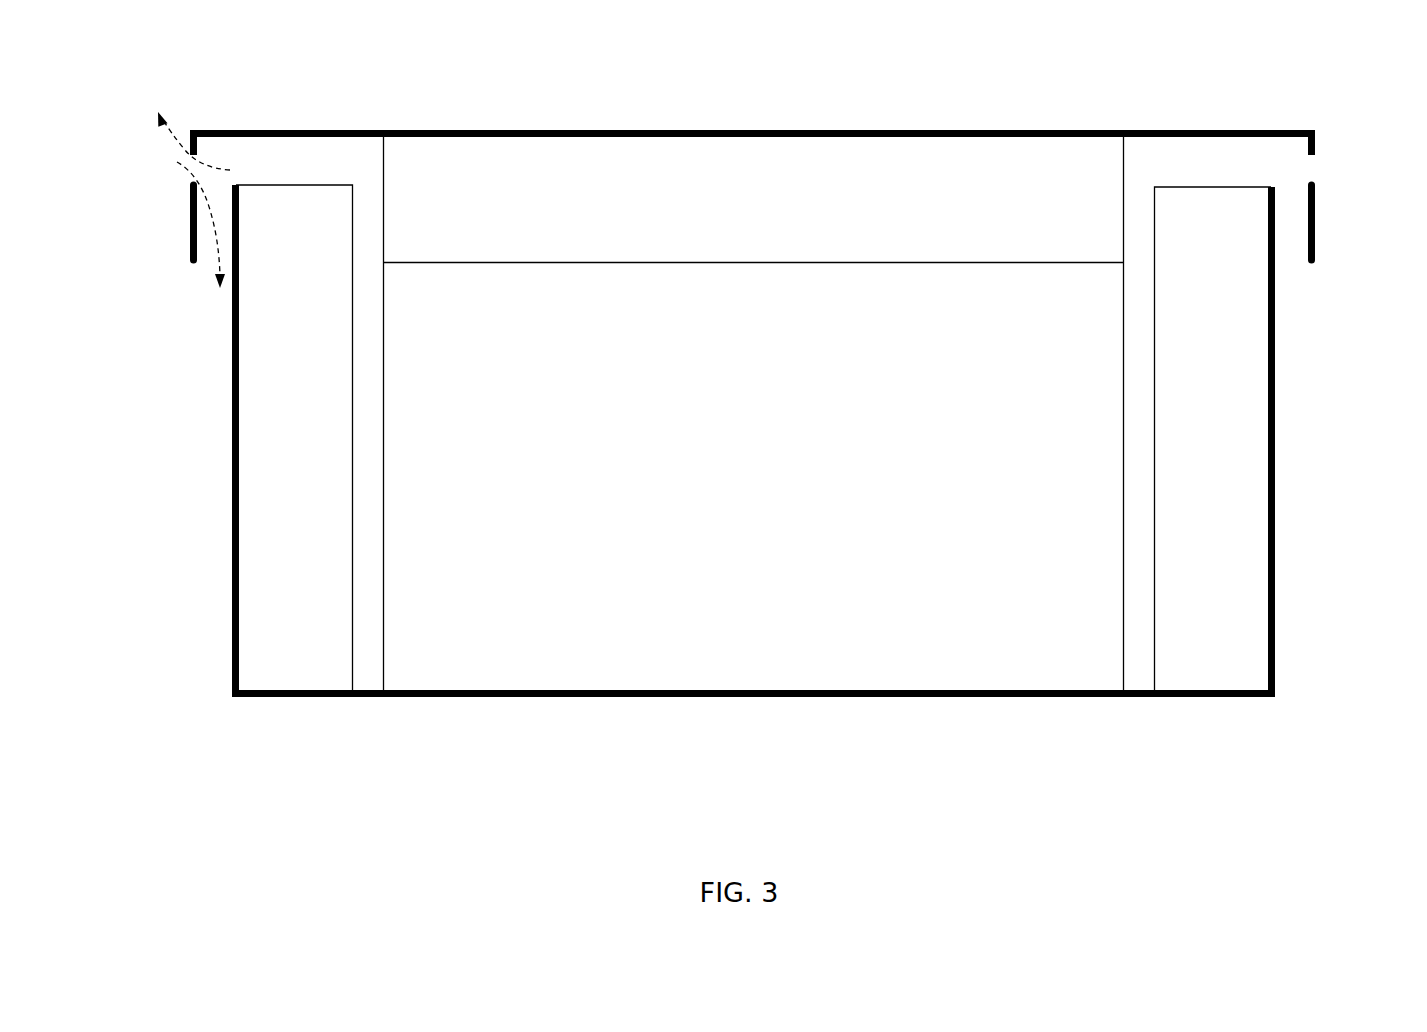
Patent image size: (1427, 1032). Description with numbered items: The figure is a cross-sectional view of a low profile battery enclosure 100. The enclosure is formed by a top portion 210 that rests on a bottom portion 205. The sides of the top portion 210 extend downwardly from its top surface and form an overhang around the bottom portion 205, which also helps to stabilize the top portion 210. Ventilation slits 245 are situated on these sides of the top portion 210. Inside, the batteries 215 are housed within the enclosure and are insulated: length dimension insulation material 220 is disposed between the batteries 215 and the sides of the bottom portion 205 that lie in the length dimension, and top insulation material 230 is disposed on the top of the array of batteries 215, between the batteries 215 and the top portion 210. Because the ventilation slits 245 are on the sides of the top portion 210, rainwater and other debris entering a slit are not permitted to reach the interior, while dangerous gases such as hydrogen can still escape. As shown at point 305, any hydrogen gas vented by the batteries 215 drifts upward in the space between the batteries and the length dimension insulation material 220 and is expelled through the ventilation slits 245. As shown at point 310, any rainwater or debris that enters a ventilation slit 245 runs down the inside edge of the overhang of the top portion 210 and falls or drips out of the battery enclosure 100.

The low profile battery enclosure 100 is at (331, 804).
The bottom portion 205 is at (622, 714).
The top portion 210 is at (496, 116).
The batteries 215 is at (953, 591).
The length dimension insulation material 220 is at (270, 428).
The top insulation material 230 is at (735, 166).
The ventilation slits 245 is at (169, 185).
The point 305 is at (217, 145).
The point 310 is at (178, 217).